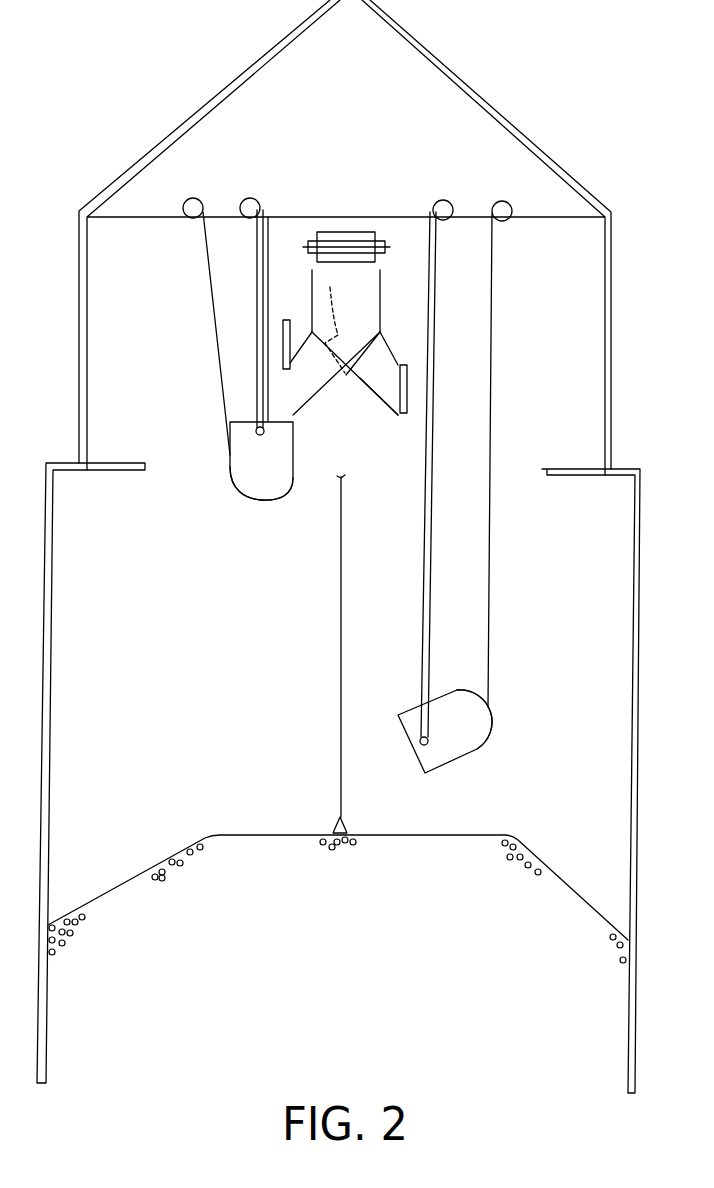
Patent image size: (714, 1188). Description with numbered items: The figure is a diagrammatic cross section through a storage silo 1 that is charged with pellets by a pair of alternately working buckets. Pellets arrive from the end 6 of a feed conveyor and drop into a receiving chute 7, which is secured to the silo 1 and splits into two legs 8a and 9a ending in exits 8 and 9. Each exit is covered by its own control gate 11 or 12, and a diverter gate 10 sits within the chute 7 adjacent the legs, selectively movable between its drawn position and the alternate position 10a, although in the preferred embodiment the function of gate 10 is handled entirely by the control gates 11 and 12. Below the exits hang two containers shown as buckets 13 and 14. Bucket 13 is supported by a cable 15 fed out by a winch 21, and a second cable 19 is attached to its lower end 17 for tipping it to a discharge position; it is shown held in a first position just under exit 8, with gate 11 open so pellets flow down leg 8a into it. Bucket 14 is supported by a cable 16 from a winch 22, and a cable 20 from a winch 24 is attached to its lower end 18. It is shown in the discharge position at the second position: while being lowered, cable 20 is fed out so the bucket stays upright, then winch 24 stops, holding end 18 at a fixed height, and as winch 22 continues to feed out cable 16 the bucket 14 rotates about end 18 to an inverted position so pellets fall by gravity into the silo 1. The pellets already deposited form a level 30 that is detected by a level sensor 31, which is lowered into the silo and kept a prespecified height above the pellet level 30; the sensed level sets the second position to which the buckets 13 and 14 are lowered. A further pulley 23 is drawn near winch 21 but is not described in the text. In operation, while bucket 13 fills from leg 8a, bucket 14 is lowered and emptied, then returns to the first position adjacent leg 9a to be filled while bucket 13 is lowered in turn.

The storage silo 1 is at (638, 752).
The end of conveyor 6 is at (352, 246).
The receiving chute 7 is at (383, 290).
The exit 8 is at (298, 384).
The leg 8a is at (312, 393).
The exit 9 is at (393, 392).
The leg 9a is at (373, 395).
The diverter gate 10 is at (363, 355).
The diverter gate position 10a is at (332, 319).
The control gate 11 is at (300, 328).
The control gate 12 is at (407, 368).
The bucket 13 is at (277, 476).
The bucket 14 is at (470, 735).
The cable 15 is at (268, 263).
The cable 16 is at (420, 573).
The lower end of bucket 17 is at (260, 503).
The lower end of bucket 18 is at (490, 708).
The cable 19 is at (216, 342).
The cable 20 is at (487, 600).
The winch 21 is at (251, 197).
The winch 22 is at (444, 200).
The pulley 23 is at (195, 197).
The winch 24 is at (503, 202).
The level of pellets 30 is at (335, 896).
The level sensor 31 is at (332, 822).